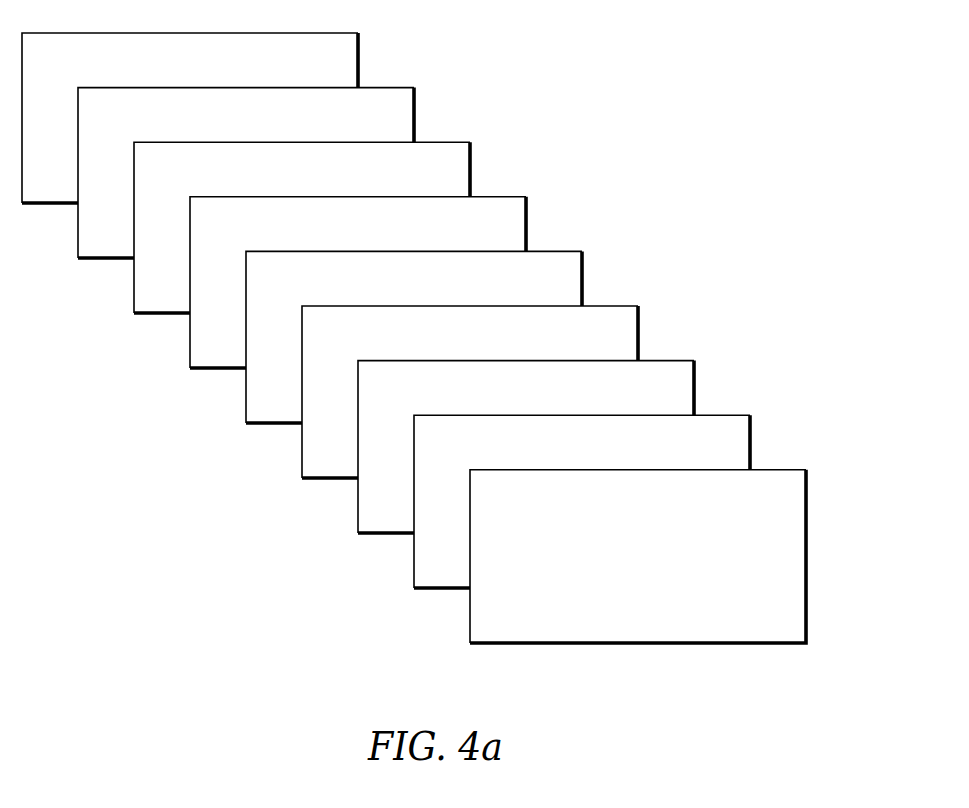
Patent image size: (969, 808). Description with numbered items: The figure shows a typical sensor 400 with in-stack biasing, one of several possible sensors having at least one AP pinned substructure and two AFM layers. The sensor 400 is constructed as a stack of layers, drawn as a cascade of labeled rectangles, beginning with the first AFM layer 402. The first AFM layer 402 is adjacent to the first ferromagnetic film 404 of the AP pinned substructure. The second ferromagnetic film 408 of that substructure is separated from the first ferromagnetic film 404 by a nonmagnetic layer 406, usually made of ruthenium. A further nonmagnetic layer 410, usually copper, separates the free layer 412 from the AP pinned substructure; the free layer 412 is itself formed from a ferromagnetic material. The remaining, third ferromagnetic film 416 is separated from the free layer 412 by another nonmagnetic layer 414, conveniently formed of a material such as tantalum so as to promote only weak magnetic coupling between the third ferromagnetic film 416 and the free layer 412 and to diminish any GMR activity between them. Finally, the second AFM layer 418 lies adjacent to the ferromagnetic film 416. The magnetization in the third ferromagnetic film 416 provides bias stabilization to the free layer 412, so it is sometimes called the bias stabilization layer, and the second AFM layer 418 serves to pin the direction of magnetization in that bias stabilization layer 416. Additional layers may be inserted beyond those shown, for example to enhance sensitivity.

The sensor 400 is at (222, 523).
The first AFM layer 402 is at (360, 49).
The first ferromagnetic film 404 is at (416, 104).
The nonmagnetic layer 406 is at (472, 158).
The second ferromagnetic film 408 is at (528, 213).
The nonmagnetic layer 410 is at (584, 267).
The free layer 412 is at (640, 322).
The nonmagnetic layer 414 is at (696, 377).
The third ferromagnetic film 416 is at (752, 431).
The second AFM layer 418 is at (808, 486).